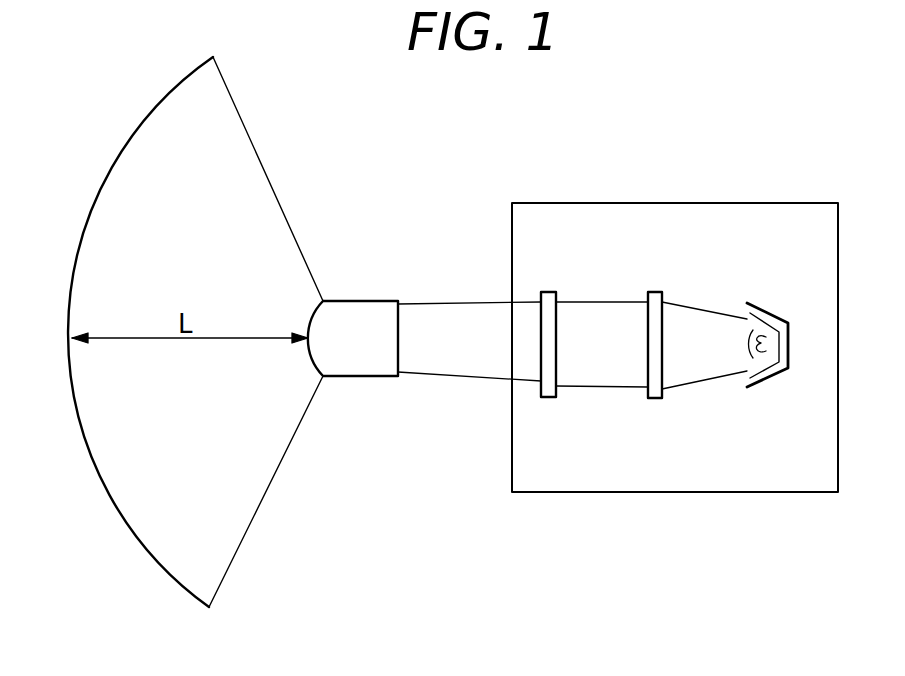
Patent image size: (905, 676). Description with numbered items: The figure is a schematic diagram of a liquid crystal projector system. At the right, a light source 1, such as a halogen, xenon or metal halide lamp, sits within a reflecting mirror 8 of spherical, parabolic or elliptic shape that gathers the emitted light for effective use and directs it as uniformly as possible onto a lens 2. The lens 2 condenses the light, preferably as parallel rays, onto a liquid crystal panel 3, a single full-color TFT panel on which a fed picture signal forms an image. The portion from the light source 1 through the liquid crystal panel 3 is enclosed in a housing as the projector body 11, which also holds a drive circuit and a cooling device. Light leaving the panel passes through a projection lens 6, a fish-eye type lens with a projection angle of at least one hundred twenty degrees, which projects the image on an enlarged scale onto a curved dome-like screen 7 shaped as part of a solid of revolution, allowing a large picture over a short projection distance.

The light source 1 is at (749, 360).
The lens 2 is at (653, 292).
The liquid crystal panel 3 is at (548, 292).
The projection lens 6 is at (368, 301).
The curved dome-like screen 7 is at (170, 92).
The reflecting mirror 8 is at (790, 358).
The projector body 11 is at (763, 213).